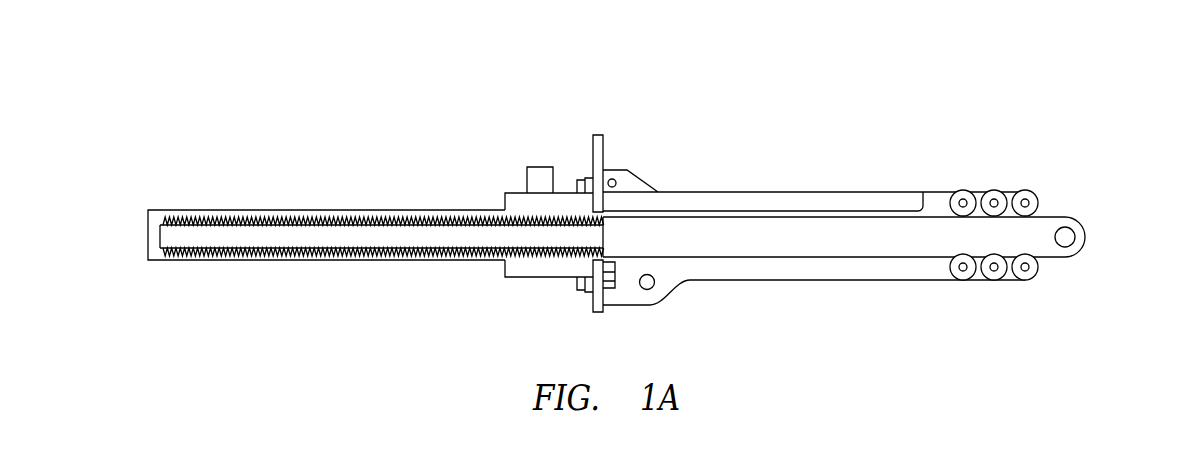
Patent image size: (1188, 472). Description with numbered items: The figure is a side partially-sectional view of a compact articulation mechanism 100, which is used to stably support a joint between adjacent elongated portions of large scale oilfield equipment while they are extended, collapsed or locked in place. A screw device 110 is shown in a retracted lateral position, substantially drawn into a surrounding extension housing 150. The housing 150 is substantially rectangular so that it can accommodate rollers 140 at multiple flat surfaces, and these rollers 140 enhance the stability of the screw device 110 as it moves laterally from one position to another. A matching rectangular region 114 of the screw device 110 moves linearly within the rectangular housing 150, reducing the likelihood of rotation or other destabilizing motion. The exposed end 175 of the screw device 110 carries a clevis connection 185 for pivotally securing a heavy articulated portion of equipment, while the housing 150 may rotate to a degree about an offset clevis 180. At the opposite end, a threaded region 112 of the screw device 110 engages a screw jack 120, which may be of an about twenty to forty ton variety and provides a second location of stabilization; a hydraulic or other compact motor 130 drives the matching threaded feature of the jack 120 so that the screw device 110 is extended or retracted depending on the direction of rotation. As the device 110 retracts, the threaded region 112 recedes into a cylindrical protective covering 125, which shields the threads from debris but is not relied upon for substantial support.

The compact articulation mechanism 100 is at (842, 80).
The screw device 110 is at (807, 243).
The threaded region 112 is at (280, 220).
The rectangular region 114 is at (895, 240).
The screw jack 120 is at (523, 272).
The cylindrical protective covering 125 is at (155, 253).
The compact motor 130 is at (542, 172).
The rollers 140 is at (963, 191).
The extension housing 150 is at (718, 195).
The exposed end 175 is at (1048, 222).
The offset clevis 180 is at (642, 289).
The clevis connection 185 is at (1065, 247).